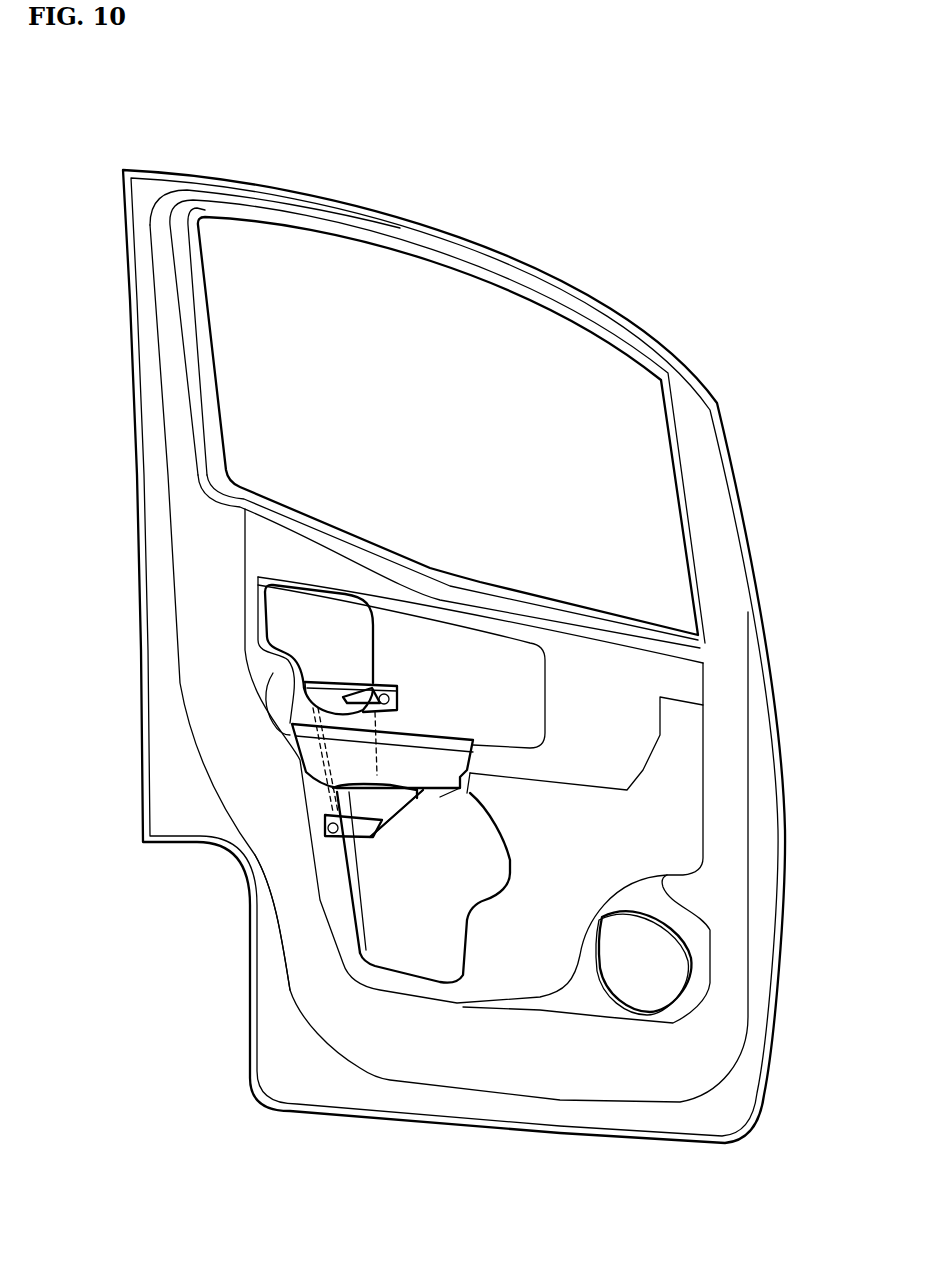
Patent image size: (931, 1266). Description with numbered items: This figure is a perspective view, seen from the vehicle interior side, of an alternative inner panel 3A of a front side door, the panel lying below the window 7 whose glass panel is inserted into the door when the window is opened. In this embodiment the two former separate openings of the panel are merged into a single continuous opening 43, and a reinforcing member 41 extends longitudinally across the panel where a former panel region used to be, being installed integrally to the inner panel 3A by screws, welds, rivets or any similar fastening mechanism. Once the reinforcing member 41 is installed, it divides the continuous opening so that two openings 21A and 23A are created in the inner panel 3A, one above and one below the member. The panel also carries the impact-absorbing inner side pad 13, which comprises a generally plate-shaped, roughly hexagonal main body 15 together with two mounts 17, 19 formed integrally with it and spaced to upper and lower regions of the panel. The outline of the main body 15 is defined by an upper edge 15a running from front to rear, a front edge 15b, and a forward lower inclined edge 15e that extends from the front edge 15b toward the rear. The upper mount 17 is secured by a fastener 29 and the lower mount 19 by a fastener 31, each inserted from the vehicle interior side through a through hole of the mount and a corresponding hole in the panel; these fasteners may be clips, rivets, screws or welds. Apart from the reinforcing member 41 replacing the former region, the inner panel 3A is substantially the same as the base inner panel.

The window 7 is at (420, 250).
The alternative inner panel 3A is at (718, 553).
The opening 21A is at (345, 633).
The opening 23A is at (438, 941).
The main body 15 is at (400, 803).
The upper edge 15a is at (337, 682).
The front edge 15b is at (467, 793).
The forward lower inclined edge 15e is at (398, 819).
The mount 17 is at (400, 688).
The fastener 29 is at (392, 703).
The reinforcing member 41 is at (343, 745).
The impact-absorbing inner side pad 13 is at (410, 833).
The fastener 31 is at (325, 833).
The mount 19 is at (355, 845).
The single continuous opening 43 is at (352, 917).